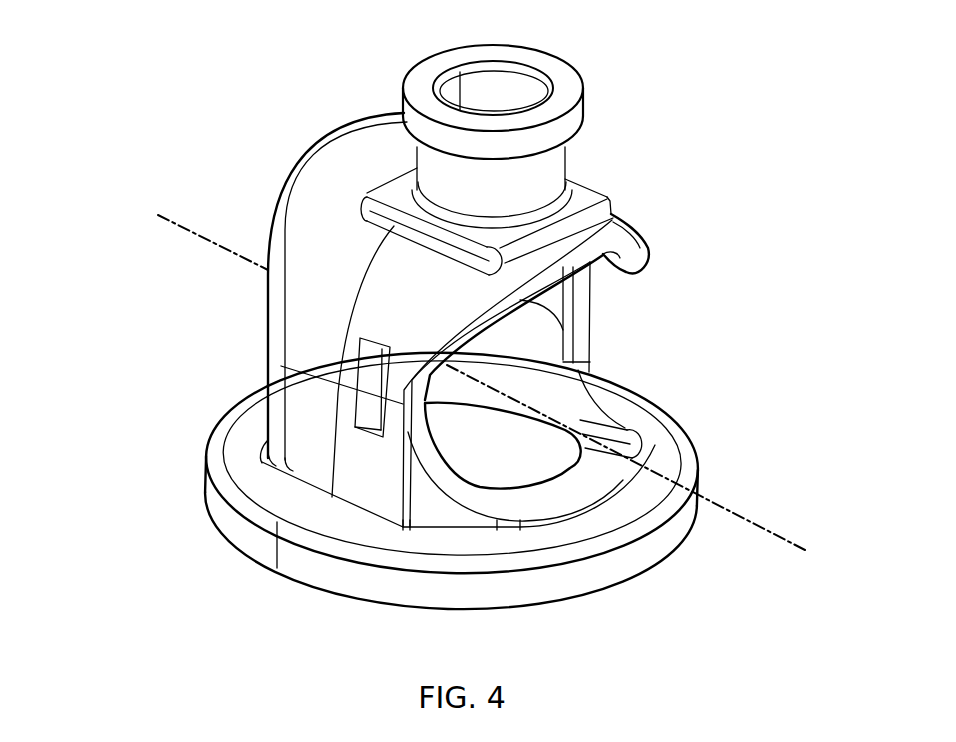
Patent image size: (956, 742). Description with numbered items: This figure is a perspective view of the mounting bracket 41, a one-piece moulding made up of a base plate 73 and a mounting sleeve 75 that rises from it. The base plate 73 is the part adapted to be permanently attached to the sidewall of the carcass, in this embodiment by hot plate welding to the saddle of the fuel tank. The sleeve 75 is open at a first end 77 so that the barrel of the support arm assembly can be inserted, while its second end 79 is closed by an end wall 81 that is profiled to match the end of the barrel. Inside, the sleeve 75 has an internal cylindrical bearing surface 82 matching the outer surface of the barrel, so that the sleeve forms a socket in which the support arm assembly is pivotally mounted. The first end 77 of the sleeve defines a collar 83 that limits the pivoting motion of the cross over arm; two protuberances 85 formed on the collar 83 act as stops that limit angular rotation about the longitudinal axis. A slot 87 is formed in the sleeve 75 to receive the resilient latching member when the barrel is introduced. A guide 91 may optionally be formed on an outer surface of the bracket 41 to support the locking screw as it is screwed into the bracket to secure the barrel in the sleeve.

The bracket 41 is at (226, 591).
The base plate 73 is at (362, 582).
The mounting sleeve 75 is at (305, 337).
The first end 77 is at (537, 467).
The second end 79 is at (255, 184).
The end wall 81 is at (267, 285).
The internal cylindrical bearing surface 82 is at (540, 343).
The collar 83 is at (603, 397).
The protuberances 85 is at (635, 262).
The slot 87 is at (367, 407).
The guide 91 is at (422, 87).